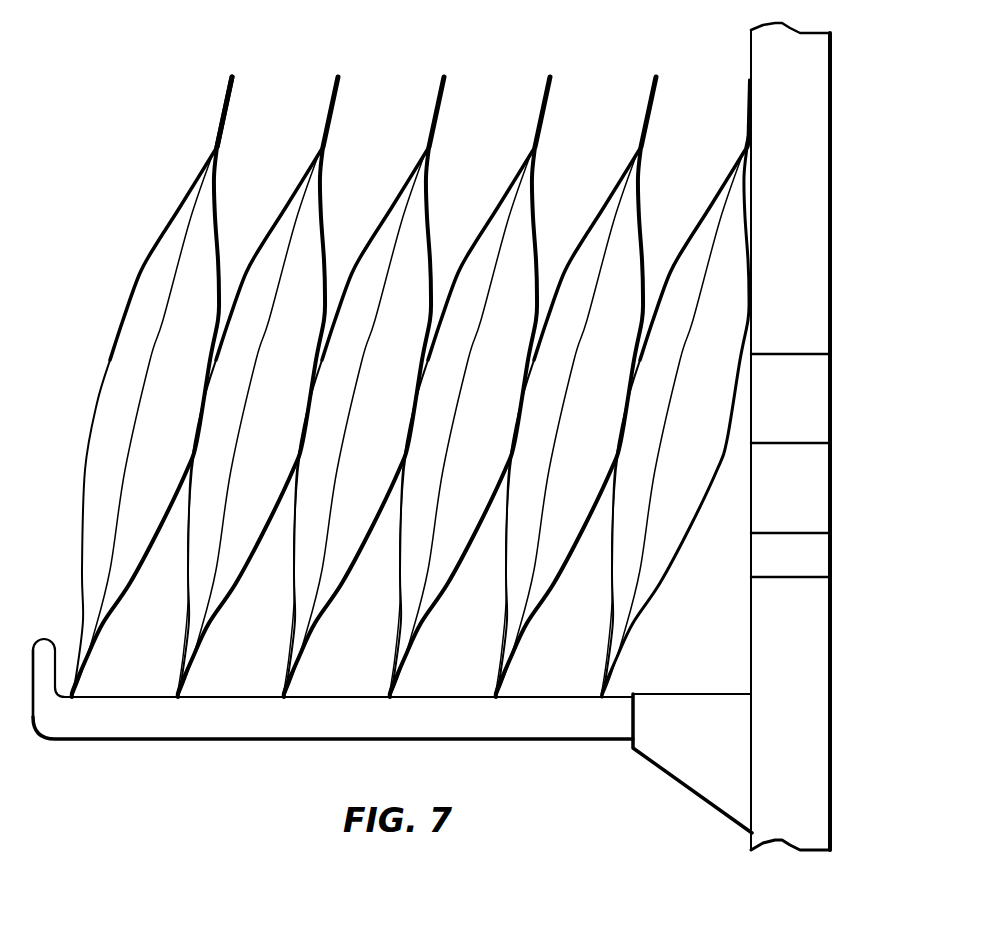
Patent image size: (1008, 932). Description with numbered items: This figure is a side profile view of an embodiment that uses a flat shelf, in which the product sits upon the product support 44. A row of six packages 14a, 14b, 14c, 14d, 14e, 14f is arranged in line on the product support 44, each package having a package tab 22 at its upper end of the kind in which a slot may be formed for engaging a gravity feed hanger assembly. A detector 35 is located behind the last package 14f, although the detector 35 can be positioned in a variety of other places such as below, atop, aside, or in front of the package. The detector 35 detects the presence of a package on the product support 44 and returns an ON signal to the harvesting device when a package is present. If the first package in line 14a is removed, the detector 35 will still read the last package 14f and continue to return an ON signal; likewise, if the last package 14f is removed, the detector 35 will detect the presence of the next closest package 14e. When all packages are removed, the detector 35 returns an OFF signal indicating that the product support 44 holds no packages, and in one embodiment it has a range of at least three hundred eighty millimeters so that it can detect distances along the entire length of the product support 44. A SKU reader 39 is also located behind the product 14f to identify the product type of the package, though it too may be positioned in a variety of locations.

The first package in line 14a is at (192, 418).
The package 14b is at (297, 418).
The package 14c is at (403, 418).
The package 14d is at (510, 418).
The next closest package 14e is at (615, 418).
The last package 14f is at (721, 418).
The package tab 22 is at (437, 105).
The detector 35 is at (815, 400).
The SKU reader 39 is at (816, 556).
The product support 44 is at (222, 740).